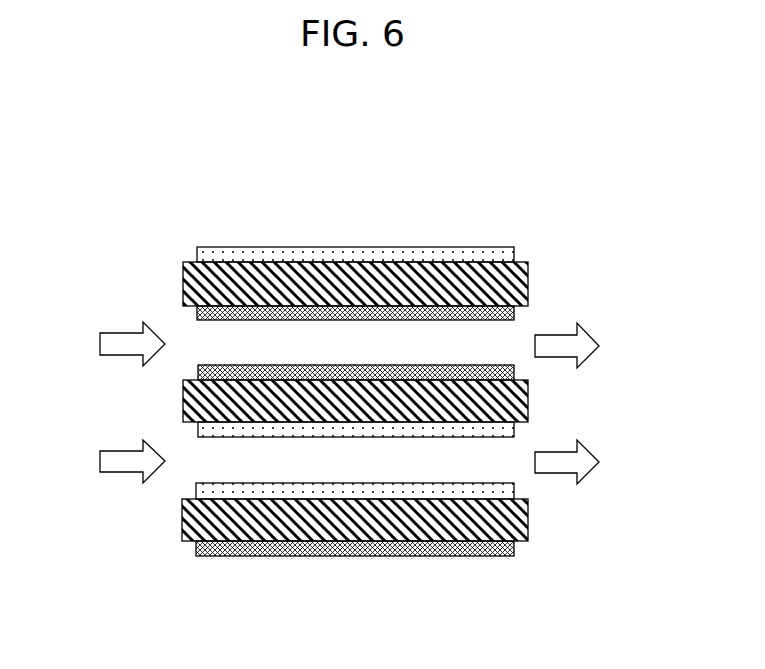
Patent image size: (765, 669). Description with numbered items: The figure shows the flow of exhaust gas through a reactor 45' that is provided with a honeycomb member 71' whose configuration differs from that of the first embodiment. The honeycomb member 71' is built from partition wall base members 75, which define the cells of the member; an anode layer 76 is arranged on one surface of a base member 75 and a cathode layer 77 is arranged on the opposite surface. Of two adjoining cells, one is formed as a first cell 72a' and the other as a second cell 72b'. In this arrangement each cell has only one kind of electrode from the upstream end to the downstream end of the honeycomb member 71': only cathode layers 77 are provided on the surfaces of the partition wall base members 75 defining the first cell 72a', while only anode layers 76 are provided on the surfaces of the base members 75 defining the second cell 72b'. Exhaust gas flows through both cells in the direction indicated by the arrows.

The reactor 45' is at (346, 366).
The honeycomb member 71' is at (410, 222).
The first cell 72a' is at (346, 261).
The second cell 72b' is at (339, 548).
The partition wall base member 75 is at (510, 407).
The anode layer 76 is at (497, 494).
The cathode layer 77 is at (512, 304).